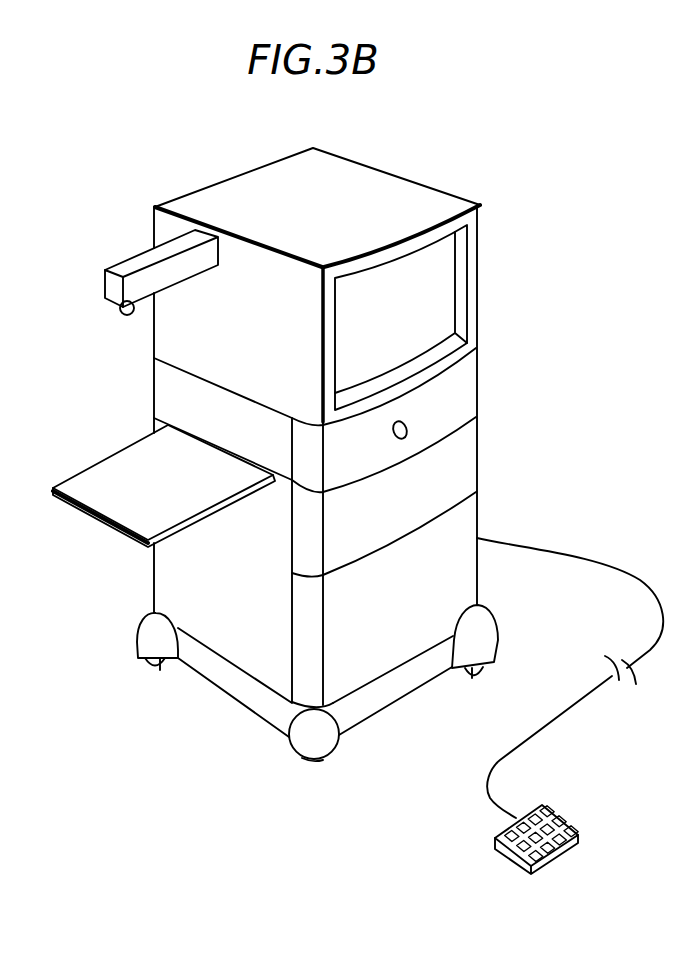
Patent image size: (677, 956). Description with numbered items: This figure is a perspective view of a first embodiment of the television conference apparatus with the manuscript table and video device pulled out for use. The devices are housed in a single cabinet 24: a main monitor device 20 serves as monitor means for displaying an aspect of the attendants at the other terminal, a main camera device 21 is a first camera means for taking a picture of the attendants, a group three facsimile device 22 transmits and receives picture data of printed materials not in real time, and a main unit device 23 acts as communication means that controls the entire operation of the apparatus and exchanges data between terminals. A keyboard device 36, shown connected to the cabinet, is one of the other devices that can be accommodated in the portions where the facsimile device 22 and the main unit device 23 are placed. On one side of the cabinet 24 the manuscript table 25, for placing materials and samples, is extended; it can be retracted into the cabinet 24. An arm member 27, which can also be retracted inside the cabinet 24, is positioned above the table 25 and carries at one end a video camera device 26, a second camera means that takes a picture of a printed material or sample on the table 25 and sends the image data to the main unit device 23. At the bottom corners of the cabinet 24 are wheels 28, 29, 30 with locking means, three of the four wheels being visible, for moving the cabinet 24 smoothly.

The main monitor device 20 is at (440, 315).
The main camera device 21 is at (408, 422).
The group 3 facsimile device 22 is at (458, 475).
The main unit device 23 is at (455, 533).
The cabinet 24 is at (432, 183).
The manuscript table 25 is at (118, 463).
The video camera device 26 is at (125, 318).
The arm member 27 is at (125, 265).
The wheel 28 is at (155, 670).
The wheel 29 is at (322, 760).
The wheel 30 is at (473, 680).
The keyboard device 36 is at (558, 813).